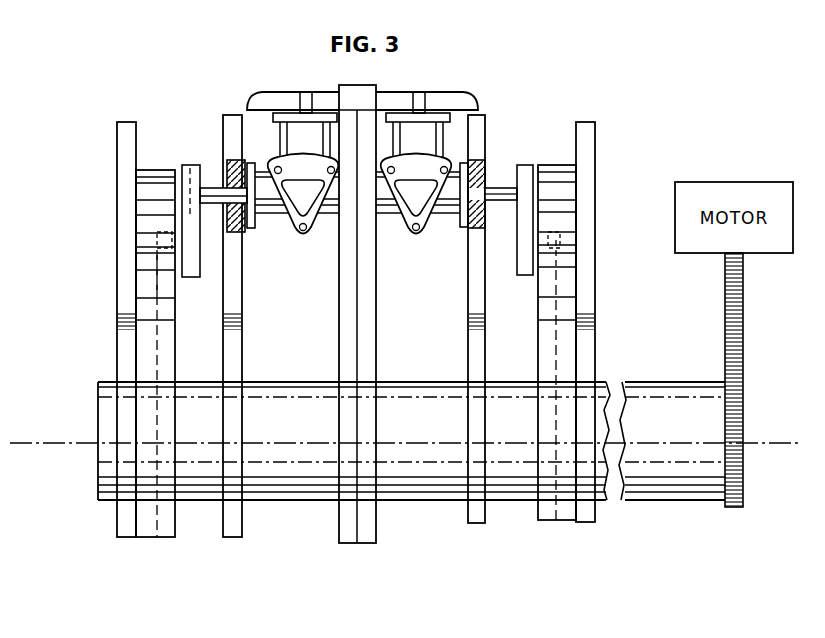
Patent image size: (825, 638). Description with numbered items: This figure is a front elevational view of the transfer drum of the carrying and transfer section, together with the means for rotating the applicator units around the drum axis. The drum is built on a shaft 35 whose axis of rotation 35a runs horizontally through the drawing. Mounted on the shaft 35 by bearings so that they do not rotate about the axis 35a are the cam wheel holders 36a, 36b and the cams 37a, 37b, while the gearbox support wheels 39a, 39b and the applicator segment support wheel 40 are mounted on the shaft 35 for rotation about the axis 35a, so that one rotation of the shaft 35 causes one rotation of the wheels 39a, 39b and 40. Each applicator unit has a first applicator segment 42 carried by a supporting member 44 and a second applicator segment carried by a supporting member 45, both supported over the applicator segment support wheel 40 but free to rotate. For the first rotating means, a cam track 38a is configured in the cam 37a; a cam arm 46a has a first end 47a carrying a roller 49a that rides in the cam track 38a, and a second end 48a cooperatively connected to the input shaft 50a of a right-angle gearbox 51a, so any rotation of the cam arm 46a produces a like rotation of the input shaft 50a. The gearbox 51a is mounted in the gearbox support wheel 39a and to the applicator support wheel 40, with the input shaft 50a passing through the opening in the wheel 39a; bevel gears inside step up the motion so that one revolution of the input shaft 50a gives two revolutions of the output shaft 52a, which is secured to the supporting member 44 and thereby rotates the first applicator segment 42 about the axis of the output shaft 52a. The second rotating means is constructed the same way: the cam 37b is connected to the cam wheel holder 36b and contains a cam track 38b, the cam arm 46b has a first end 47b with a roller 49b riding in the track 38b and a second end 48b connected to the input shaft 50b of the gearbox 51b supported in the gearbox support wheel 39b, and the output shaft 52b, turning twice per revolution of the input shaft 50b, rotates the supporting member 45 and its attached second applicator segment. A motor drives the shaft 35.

The shaft 35 is at (98, 386).
The axis of rotation 35a is at (68, 443).
The cam wheel holder 36a is at (117, 328).
The cam wheel holder 36b is at (596, 343).
The cam 37a is at (172, 178).
The cam 37b is at (570, 182).
The cam track 38a is at (200, 247).
The cam track 38b is at (558, 253).
The gearbox support wheel 39a is at (243, 305).
The gearbox support wheel 39b is at (473, 357).
The applicator segment support wheel 40 is at (352, 327).
The first applicator segment 42 is at (338, 104).
The supporting member 44 is at (270, 100).
The supporting member 45 is at (468, 98).
The cam arm 46a is at (197, 230).
The cam arm 46b is at (520, 228).
The first end 47a is at (199, 266).
The first end 47b is at (520, 268).
The second end 48a is at (185, 180).
The second end 48b is at (518, 173).
The roller 49a is at (157, 235).
The roller 49b is at (560, 235).
The input shaft 50a is at (228, 166).
The input shaft 50b is at (525, 198).
The gearbox 51a is at (273, 212).
The gearbox 51b is at (447, 212).
The output shaft 52a is at (306, 94).
The output shaft 52b is at (418, 94).